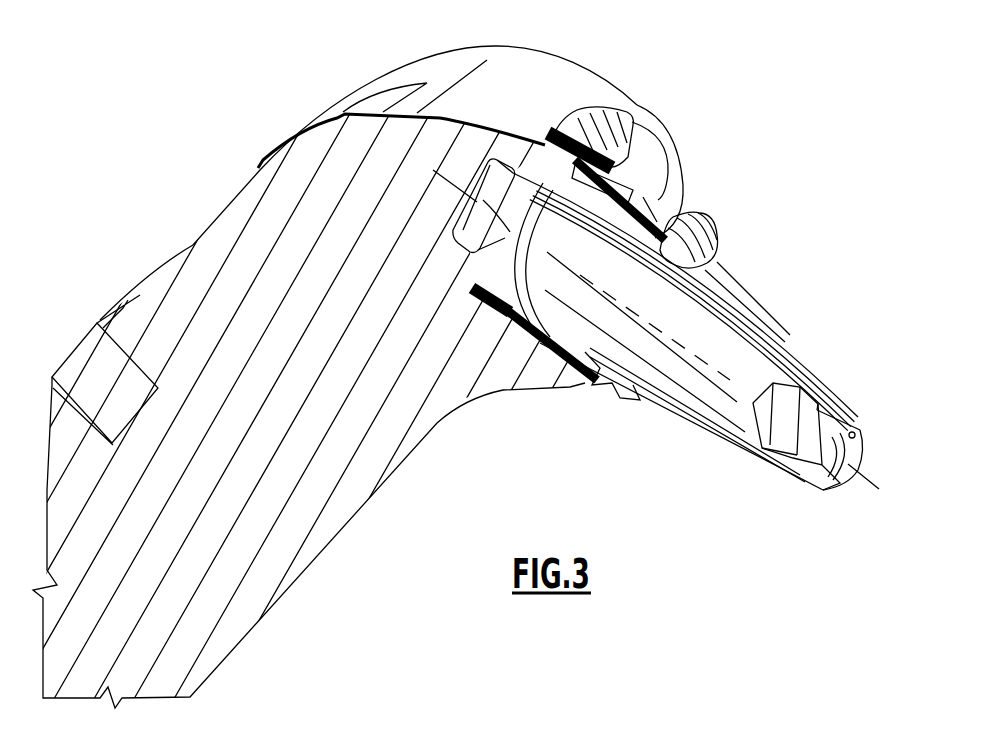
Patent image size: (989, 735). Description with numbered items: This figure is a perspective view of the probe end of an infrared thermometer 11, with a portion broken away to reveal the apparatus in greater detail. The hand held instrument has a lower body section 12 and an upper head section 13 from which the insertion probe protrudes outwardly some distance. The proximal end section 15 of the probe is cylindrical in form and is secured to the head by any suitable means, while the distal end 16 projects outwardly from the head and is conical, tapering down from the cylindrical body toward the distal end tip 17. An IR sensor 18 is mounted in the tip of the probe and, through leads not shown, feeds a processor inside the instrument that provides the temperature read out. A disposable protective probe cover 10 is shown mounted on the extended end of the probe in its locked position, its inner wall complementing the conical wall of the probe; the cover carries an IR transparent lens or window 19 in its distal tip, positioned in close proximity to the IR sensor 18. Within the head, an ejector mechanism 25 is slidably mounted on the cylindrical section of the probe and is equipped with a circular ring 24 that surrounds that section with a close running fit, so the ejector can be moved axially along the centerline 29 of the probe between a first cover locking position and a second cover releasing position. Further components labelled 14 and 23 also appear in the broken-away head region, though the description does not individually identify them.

The probe cover 10 is at (737, 265).
The infrared thermometer 11 is at (214, 140).
The lower body section 12 is at (307, 520).
The upper head section 13 is at (578, 82).
The flange 14 is at (707, 415).
The proximal end section 15 is at (557, 325).
The distal end 16 is at (735, 352).
The distal end tip 17 is at (803, 463).
The IR sensor 18 is at (805, 435).
The IR transparent lens or window 19 is at (848, 460).
The bracket 23 is at (640, 100).
The circular ring 24 is at (547, 163).
The ejector mechanism 25 is at (627, 140).
The centerline 29 is at (853, 476).